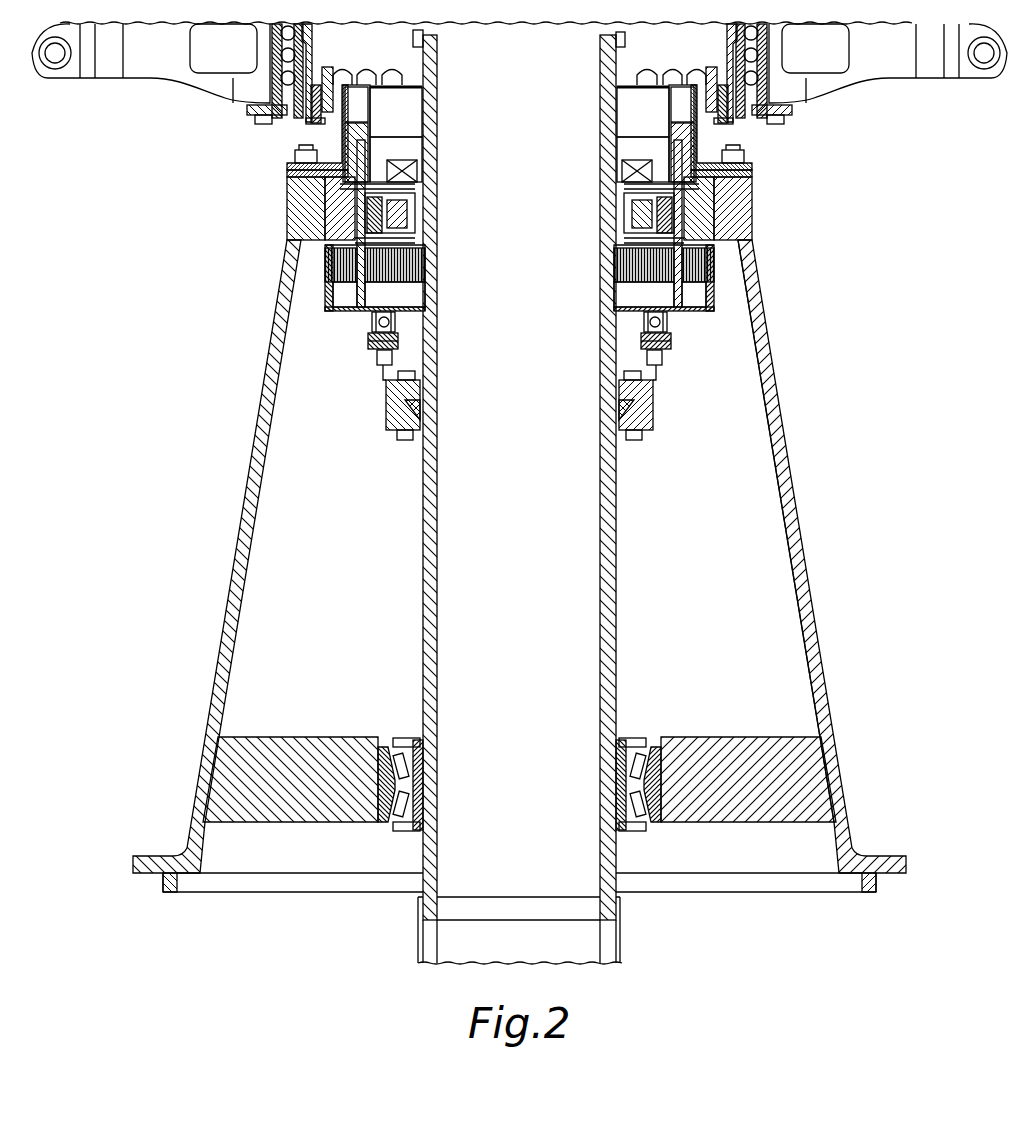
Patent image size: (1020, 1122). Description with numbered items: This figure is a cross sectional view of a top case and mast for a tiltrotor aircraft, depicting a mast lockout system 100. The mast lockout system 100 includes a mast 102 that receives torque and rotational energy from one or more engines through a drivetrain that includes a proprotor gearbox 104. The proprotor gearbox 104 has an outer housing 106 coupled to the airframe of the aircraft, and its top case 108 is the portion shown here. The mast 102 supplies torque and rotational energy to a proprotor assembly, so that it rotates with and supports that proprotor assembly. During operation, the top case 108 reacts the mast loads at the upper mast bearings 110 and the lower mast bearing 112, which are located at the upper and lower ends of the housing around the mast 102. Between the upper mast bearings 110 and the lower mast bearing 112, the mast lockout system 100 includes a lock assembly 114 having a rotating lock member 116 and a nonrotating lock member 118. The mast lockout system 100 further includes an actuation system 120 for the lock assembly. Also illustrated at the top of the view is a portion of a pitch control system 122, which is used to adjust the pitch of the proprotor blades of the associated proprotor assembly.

The mast lockout system 100 is at (722, 288).
The mast 102 is at (614, 533).
The proprotor gearbox 104 is at (519, 534).
The outer housing 106 is at (822, 556).
The top case 108 is at (788, 484).
The upper mast bearings 110 is at (660, 218).
The lower mast bearing 112 is at (630, 737).
The lock assembly 114 is at (672, 349).
The rotating lock member 116 is at (655, 408).
The nonrotating lock member 118 is at (667, 323).
The actuation system 120 is at (682, 153).
The pitch control system 122 is at (227, 94).